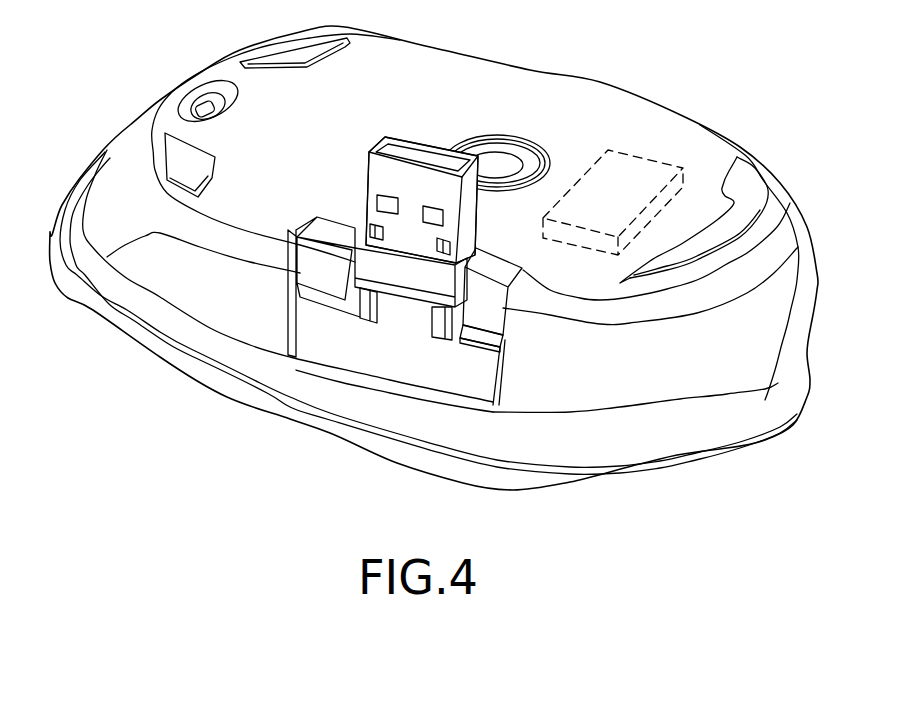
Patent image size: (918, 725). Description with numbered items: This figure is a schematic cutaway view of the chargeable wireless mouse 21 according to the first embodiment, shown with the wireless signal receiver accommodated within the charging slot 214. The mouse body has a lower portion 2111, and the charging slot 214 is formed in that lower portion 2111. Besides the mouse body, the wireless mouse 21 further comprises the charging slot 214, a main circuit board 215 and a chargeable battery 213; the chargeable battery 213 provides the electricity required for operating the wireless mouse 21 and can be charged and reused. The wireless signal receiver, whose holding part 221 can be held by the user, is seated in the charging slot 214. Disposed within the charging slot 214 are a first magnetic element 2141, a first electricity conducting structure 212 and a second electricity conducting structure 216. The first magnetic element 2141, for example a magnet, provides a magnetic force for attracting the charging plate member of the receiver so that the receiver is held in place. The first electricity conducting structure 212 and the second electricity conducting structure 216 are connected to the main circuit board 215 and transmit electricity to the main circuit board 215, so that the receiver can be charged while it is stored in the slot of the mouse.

The wireless mouse 21 is at (130, 152).
The lower portion 2111 is at (424, 67).
The holding part 221 is at (83, 258).
The first electricity conducting structure 212 is at (318, 270).
The chargeable battery 213 is at (643, 173).
The charging slot 214 is at (512, 165).
The first magnetic element 2141 is at (440, 327).
The main circuit board 215 is at (490, 322).
The second electricity conducting structure 216 is at (505, 318).